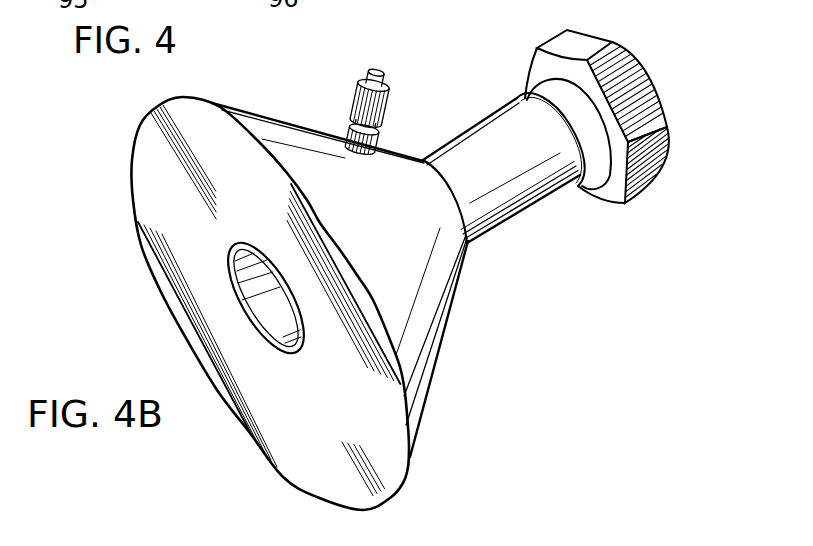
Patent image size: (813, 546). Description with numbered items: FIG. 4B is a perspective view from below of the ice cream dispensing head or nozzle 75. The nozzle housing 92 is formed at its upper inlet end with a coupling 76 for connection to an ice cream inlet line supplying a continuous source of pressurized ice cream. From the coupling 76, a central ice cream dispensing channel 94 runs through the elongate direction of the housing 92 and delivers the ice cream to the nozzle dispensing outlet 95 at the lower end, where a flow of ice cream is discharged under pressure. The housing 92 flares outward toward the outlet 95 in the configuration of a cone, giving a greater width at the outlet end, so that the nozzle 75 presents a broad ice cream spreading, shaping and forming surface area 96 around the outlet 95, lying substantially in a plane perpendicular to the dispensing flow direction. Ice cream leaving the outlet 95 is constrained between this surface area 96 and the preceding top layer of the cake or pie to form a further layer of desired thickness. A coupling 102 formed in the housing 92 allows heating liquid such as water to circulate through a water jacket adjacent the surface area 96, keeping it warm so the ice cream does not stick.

The ice cream dispensing head or nozzle 75 is at (125, 161).
The coupling 76 is at (560, 40).
The nozzle housing 92 is at (444, 341).
The central ice cream dispensing channel 94 is at (540, 221).
The nozzle dispensing outlet 95 is at (271, 330).
The ice cream spreading, shaping and forming surface area 96 is at (257, 204).
The outlet coupling 102 is at (387, 104).